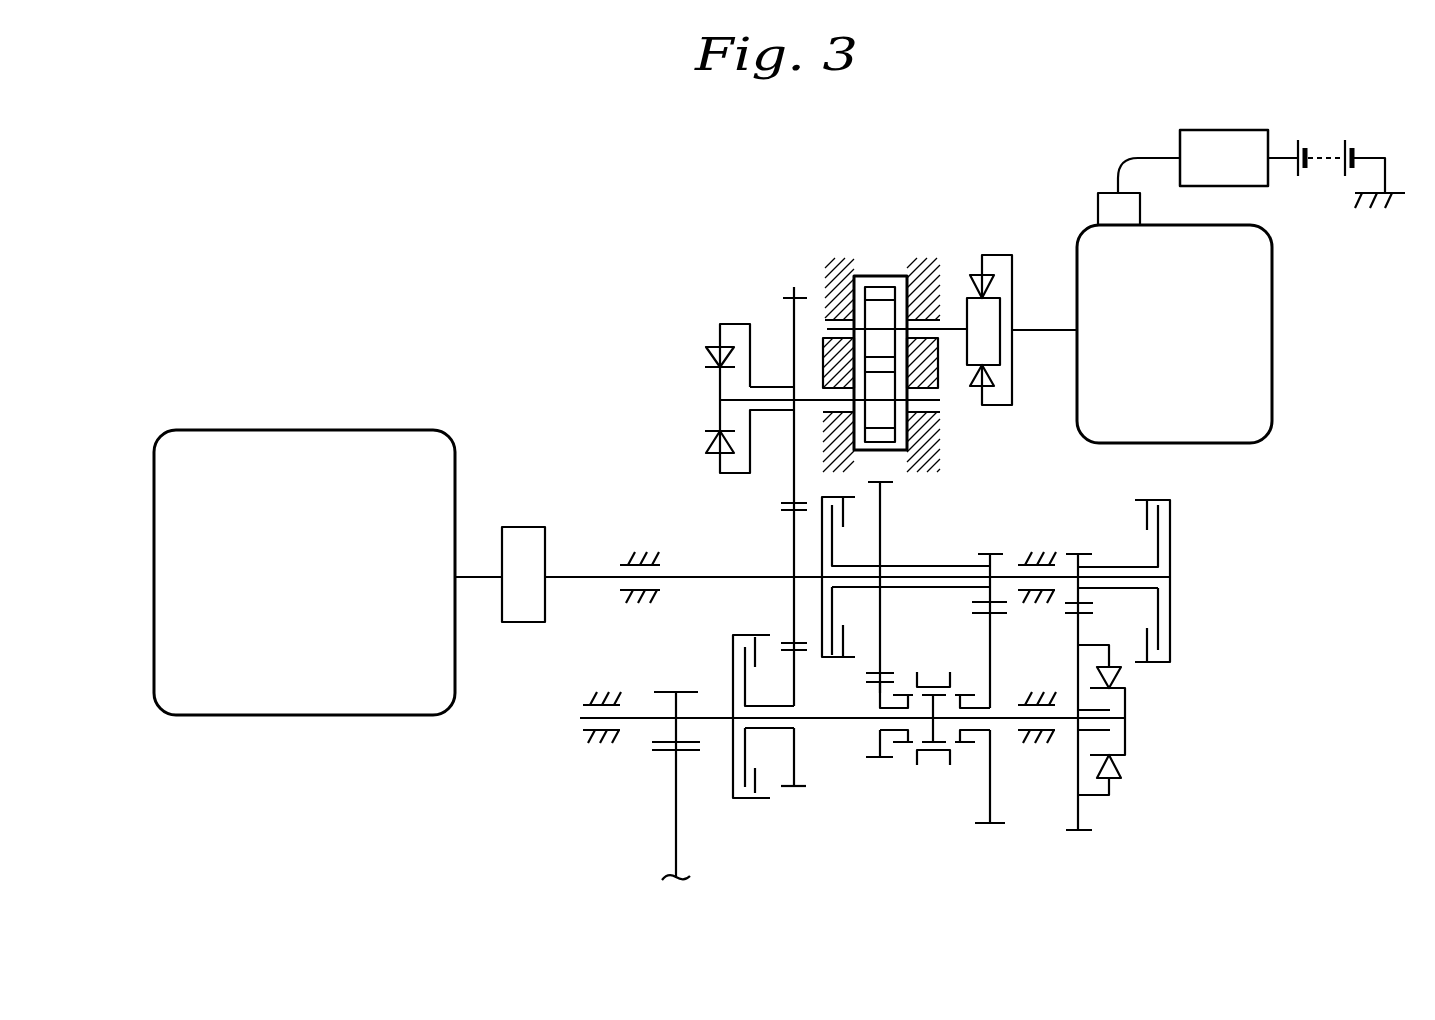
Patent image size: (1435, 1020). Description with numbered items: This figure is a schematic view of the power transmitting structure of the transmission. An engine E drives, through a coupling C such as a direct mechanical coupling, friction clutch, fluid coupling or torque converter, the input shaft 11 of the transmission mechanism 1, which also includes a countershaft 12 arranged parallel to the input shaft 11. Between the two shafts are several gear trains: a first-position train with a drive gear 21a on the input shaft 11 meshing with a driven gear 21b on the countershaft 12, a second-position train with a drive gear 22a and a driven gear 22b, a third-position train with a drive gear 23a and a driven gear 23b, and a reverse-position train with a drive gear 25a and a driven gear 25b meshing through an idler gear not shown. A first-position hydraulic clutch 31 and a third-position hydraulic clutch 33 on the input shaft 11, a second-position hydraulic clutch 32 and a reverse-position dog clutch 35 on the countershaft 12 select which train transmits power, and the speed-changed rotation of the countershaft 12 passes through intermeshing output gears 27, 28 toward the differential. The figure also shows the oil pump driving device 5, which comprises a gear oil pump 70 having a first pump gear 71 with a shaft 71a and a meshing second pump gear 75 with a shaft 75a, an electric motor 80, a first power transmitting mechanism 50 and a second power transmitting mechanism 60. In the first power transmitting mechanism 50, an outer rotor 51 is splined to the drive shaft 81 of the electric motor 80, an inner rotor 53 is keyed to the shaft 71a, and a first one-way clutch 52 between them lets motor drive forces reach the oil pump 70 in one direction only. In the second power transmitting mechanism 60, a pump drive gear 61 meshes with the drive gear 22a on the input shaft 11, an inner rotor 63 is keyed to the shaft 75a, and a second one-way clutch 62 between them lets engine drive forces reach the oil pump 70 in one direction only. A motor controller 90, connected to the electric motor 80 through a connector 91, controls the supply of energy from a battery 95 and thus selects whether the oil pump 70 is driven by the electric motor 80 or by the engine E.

The transmission mechanism 1 is at (882, 852).
The oil pump driving device 5 is at (847, 200).
The input shaft 11 is at (730, 577).
The countershaft 12 is at (812, 718).
The drive gear 21a is at (1078, 552).
The driven gear 21b is at (1075, 835).
The drive gear 22a is at (792, 528).
The driven gear 22b is at (793, 790).
The drive gear 23a is at (882, 512).
The driven gear 23b is at (880, 757).
The drive gear 25a is at (990, 553).
The driven gear 25b is at (990, 826).
The output gear 27 is at (672, 690).
The output gear 28 is at (676, 783).
The first-position hydraulic clutch 31 is at (1172, 510).
The second-position hydraulic clutch 32 is at (738, 800).
The third-position hydraulic clutch 33 is at (815, 618).
The reverse-position dog clutch 35 is at (933, 672).
The first power transmitting mechanism 50 is at (967, 188).
The outer rotor 51 is at (1013, 282).
The first one-way clutch 52 is at (966, 386).
The inner rotor 53 is at (968, 290).
The second power transmitting mechanism 60 is at (738, 288).
The pump drive gear 61 is at (794, 287).
The second one-way clutch 62 is at (705, 352).
The inner rotor 63 is at (720, 413).
The gear oil pump 70 is at (890, 250).
The first pump gear 71 is at (877, 313).
The shaft 71a is at (926, 322).
The second pump gear 75 is at (887, 413).
The shaft 75a is at (813, 400).
The electric motor 80 is at (1197, 342).
The drive shaft 81 is at (1040, 332).
The motor controller 90 is at (1245, 180).
The connector 91 is at (1143, 210).
The battery 95 is at (1352, 156).
The coupling C is at (522, 535).
The engine E is at (316, 582).